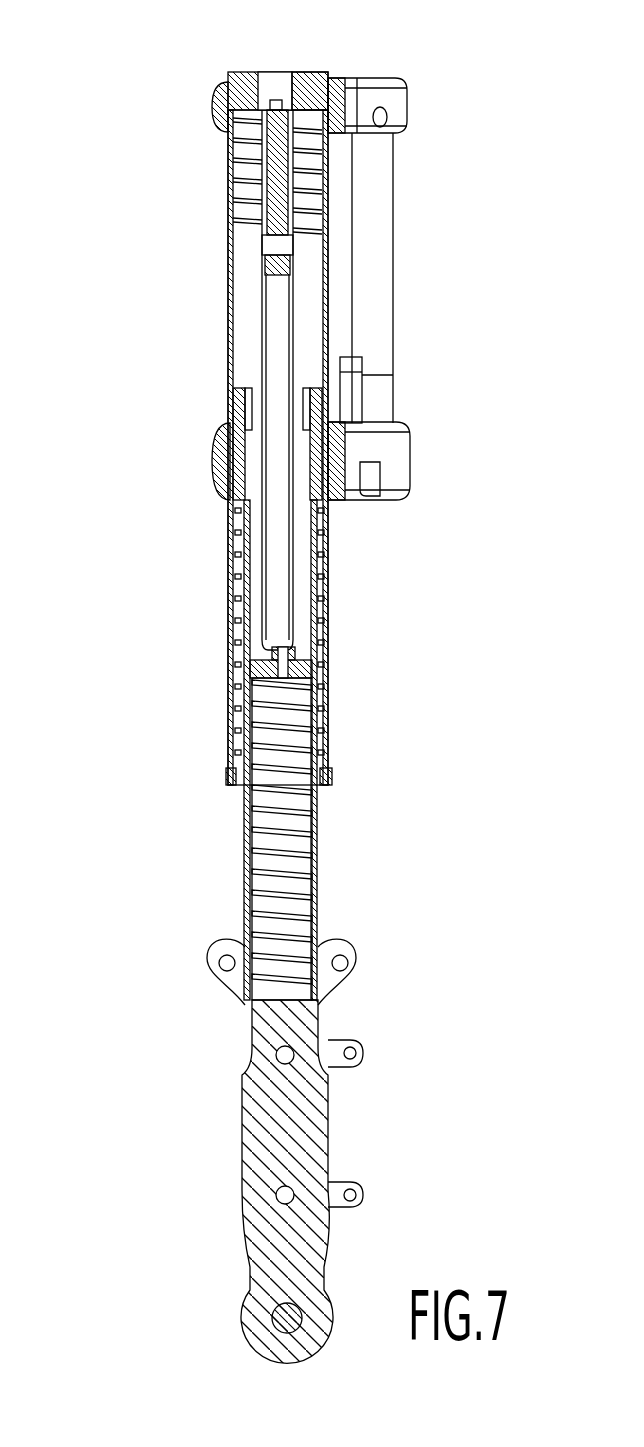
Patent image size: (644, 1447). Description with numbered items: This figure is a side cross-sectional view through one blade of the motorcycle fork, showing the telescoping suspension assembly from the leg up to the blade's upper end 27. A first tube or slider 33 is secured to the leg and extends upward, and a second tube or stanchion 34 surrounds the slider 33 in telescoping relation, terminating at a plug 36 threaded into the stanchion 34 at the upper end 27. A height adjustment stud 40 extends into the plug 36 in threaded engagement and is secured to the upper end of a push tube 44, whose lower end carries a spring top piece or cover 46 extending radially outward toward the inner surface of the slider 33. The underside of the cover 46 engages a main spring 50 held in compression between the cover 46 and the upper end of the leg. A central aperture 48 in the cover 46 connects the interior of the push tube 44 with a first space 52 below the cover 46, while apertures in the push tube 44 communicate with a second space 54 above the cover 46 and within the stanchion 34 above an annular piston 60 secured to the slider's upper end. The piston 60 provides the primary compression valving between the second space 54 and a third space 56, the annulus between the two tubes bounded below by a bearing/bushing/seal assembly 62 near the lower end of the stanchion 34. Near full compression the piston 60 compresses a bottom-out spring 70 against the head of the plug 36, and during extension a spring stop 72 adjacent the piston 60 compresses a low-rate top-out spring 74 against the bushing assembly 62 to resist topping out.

The upper end 27 is at (224, 62).
The plug 36 is at (322, 53).
The height adjustment stud 40 is at (278, 178).
The bottom-out spring 70 is at (305, 225).
The annular piston 60 is at (260, 400).
The second space 54 is at (306, 330).
The spring stop 72 is at (233, 500).
The third space 56 is at (336, 541).
The top-out spring 74 is at (239, 578).
The push tube 44 is at (296, 590).
The stanchion 34 is at (332, 612).
The central longitudinal aperture 48 is at (262, 662).
The spring top piece 46 is at (306, 666).
The bearing/bushing/seal assembly 62 is at (333, 752).
The main spring 50 is at (283, 810).
The first space 52 is at (302, 897).
The slider 33 is at (318, 928).